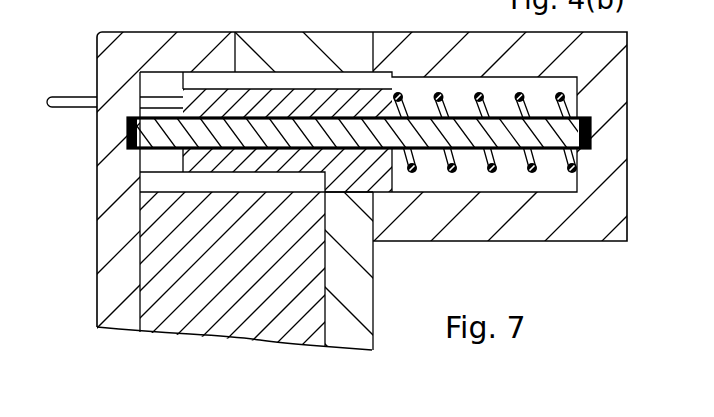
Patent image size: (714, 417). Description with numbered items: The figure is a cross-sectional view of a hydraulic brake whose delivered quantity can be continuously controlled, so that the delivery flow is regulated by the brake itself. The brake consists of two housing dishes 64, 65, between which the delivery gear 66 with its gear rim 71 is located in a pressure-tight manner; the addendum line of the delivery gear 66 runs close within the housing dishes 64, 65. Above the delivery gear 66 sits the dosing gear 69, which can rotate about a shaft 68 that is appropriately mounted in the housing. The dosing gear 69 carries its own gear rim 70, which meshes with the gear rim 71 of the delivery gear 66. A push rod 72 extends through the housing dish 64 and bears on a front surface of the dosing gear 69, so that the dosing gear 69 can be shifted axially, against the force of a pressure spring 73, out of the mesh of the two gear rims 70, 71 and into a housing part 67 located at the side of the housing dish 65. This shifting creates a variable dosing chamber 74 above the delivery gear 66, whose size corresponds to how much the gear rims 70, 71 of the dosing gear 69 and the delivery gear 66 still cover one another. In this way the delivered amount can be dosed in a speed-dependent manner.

The housing dish 64 is at (103, 210).
The housing dish 65 is at (363, 305).
The delivery gear 66 is at (192, 327).
The housing part 67 is at (575, 235).
The shaft 68 is at (128, 139).
The dosing gear 69 is at (303, 103).
The gear rim 70 is at (211, 80).
The gear rim 71 is at (232, 182).
The push rod 72 is at (68, 100).
The pressure spring 73 is at (445, 110).
The dosing chamber 74 is at (158, 84).